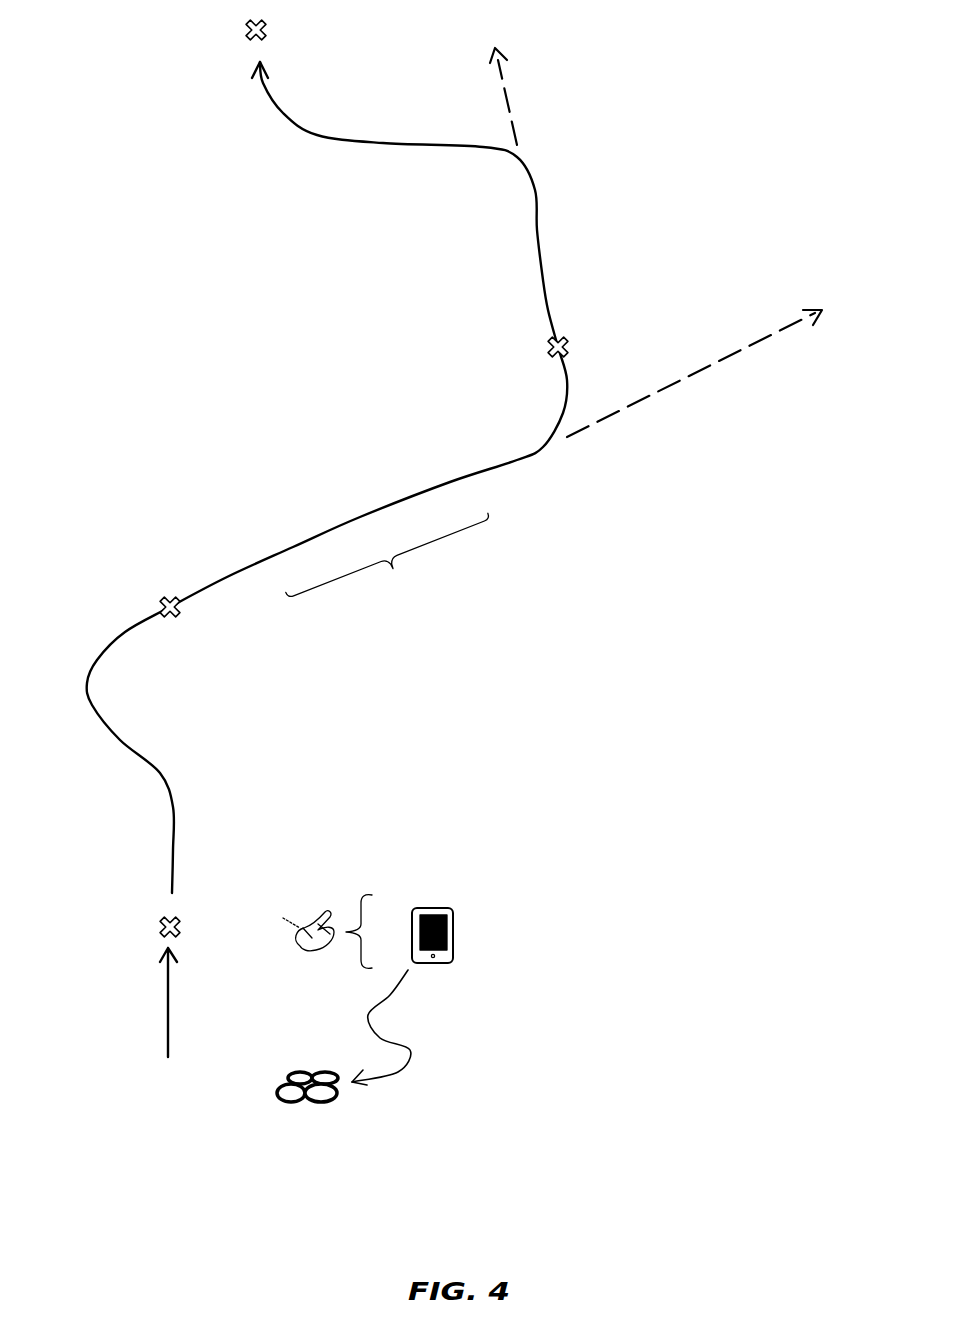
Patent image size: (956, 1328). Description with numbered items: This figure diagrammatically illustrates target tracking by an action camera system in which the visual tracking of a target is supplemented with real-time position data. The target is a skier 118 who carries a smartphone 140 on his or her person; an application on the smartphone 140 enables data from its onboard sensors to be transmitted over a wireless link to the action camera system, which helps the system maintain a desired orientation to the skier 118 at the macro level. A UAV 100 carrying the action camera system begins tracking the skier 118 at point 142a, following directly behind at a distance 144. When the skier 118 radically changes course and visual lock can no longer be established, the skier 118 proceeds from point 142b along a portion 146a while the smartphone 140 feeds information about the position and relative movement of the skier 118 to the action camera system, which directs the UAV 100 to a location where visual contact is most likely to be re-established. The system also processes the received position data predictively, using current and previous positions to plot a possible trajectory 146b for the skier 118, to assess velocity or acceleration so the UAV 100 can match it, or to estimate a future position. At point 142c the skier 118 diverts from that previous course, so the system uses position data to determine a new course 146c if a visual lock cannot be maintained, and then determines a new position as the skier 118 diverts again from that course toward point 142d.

The UAV 100 is at (308, 1110).
The skier 118 is at (308, 908).
The smartphone 140 is at (453, 937).
The point 142a is at (157, 928).
The point 142b is at (163, 600).
The point 142c is at (552, 357).
The point 142d is at (247, 35).
The distance 144 is at (167, 1003).
The portion 146a is at (390, 565).
The possible trajectory 146b is at (677, 380).
The new course 146c is at (512, 95).